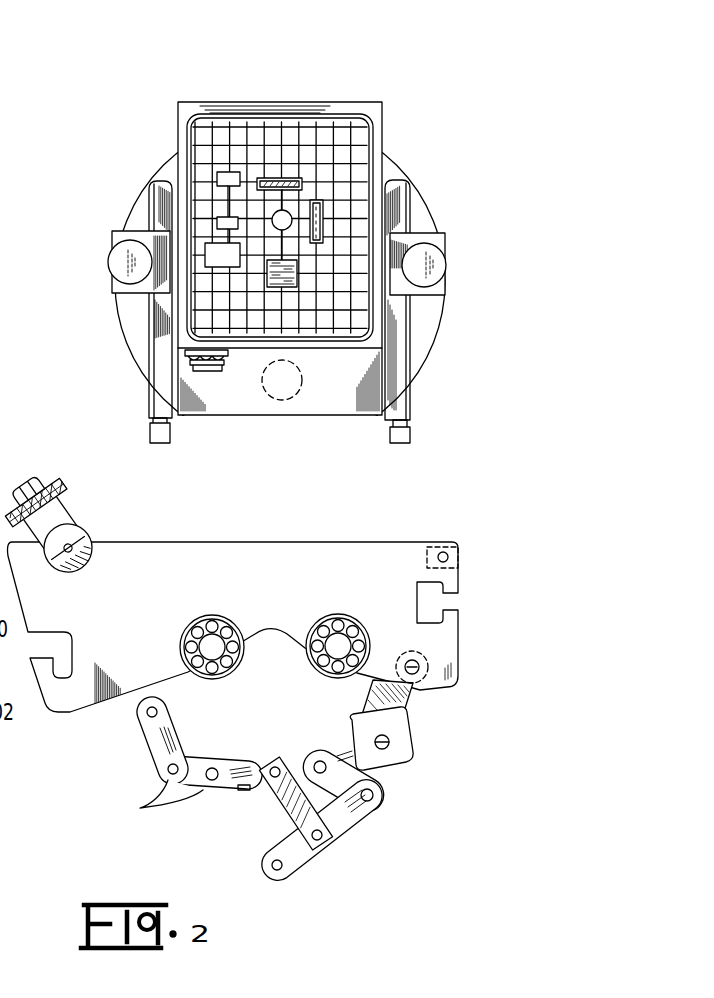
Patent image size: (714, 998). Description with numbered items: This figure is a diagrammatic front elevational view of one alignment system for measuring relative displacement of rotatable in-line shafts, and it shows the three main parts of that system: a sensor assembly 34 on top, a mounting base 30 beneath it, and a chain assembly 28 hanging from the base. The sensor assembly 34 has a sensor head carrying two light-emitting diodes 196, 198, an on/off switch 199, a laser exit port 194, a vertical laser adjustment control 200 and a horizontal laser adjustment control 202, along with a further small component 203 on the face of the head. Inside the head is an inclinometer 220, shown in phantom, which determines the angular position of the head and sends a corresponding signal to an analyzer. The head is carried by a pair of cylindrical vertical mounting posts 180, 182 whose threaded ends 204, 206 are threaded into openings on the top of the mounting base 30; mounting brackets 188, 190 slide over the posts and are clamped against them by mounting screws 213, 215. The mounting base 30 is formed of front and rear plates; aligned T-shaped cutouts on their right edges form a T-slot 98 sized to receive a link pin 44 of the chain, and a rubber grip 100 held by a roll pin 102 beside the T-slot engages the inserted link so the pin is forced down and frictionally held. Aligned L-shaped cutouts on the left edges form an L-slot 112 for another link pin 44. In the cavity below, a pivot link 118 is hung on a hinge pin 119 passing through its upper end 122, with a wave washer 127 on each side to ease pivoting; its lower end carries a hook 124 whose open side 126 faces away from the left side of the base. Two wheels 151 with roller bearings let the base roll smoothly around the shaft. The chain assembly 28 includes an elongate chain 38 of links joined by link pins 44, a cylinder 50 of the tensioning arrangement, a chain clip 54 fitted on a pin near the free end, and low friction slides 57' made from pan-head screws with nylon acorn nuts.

The sensor assembly 34 is at (398, 83).
The mounting base 30 is at (297, 532).
The vertical mounting post 180 is at (156, 183).
The vertical mounting post 182 is at (400, 190).
The mounting bracket 188 is at (110, 240).
The mounting bracket 190 is at (442, 245).
The mounting screw 213 is at (110, 272).
The mounting screw 215 is at (444, 270).
The laser exit port 194 is at (290, 212).
The sensor head light-emitting diode 196 is at (217, 222).
The sensor head light-emitting diode 198 is at (229, 172).
The on/off switch 199 is at (213, 258).
The vertical laser adjustment control 200 is at (318, 205).
The horizontal laser adjustment control 202 is at (283, 178).
The connector block 203 is at (282, 273).
The threaded end 204 is at (170, 448).
The threaded end 206 is at (405, 450).
The internal inclinometer 220 is at (298, 392).
The cylinder 50 is at (85, 533).
The rubber grip 100 is at (446, 547).
The roll pin 102 is at (462, 568).
The T-slot 98 is at (418, 582).
The L-slot 112 is at (46, 632).
The wheel 151 is at (222, 614).
The upper end 122 is at (428, 660).
The wave washer 127 is at (430, 672).
The hinge pin 119 is at (390, 680).
The pivot link 118 is at (413, 710).
The open side 126 is at (395, 744).
The hook 124 is at (395, 765).
The elongate chain 38 is at (140, 728).
The low friction slide 57' is at (271, 754).
The chain assembly 28 is at (122, 711).
The chain clip 54 is at (287, 812).
The link pin 44 is at (165, 795).